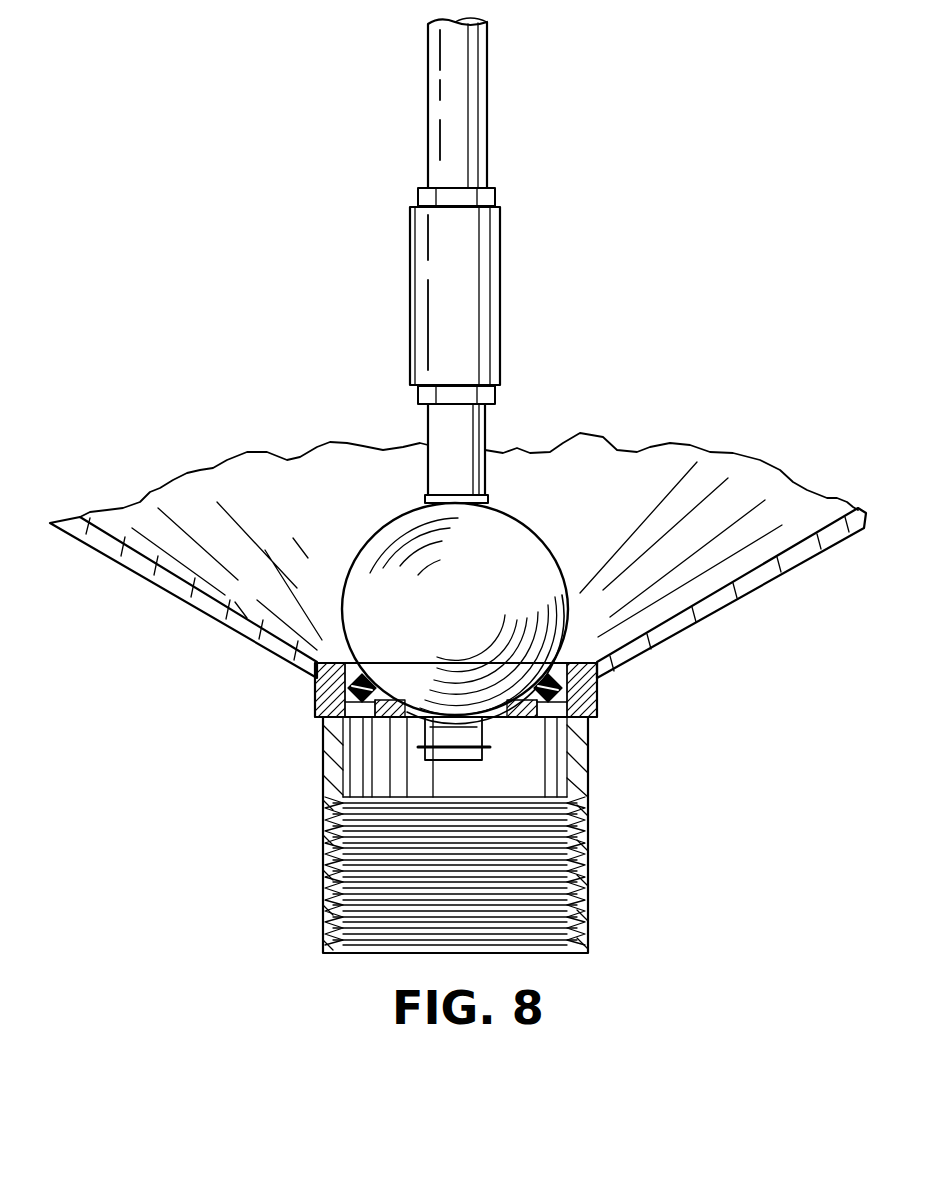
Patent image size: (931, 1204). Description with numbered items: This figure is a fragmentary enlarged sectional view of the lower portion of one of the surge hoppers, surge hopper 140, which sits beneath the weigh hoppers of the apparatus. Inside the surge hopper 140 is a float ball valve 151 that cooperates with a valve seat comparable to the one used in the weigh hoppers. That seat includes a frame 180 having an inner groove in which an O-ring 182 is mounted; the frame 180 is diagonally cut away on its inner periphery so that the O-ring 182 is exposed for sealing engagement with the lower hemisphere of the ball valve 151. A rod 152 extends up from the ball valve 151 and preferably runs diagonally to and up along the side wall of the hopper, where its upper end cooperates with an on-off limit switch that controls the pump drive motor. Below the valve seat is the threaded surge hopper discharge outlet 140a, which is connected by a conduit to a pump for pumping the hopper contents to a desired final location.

The rod 152 is at (478, 151).
The float ball valve 151 is at (518, 532).
The surge hopper 140 is at (778, 570).
The frame 180 is at (597, 710).
The O-ring 182 is at (598, 680).
The surge hopper discharge outlet 140a is at (588, 853).